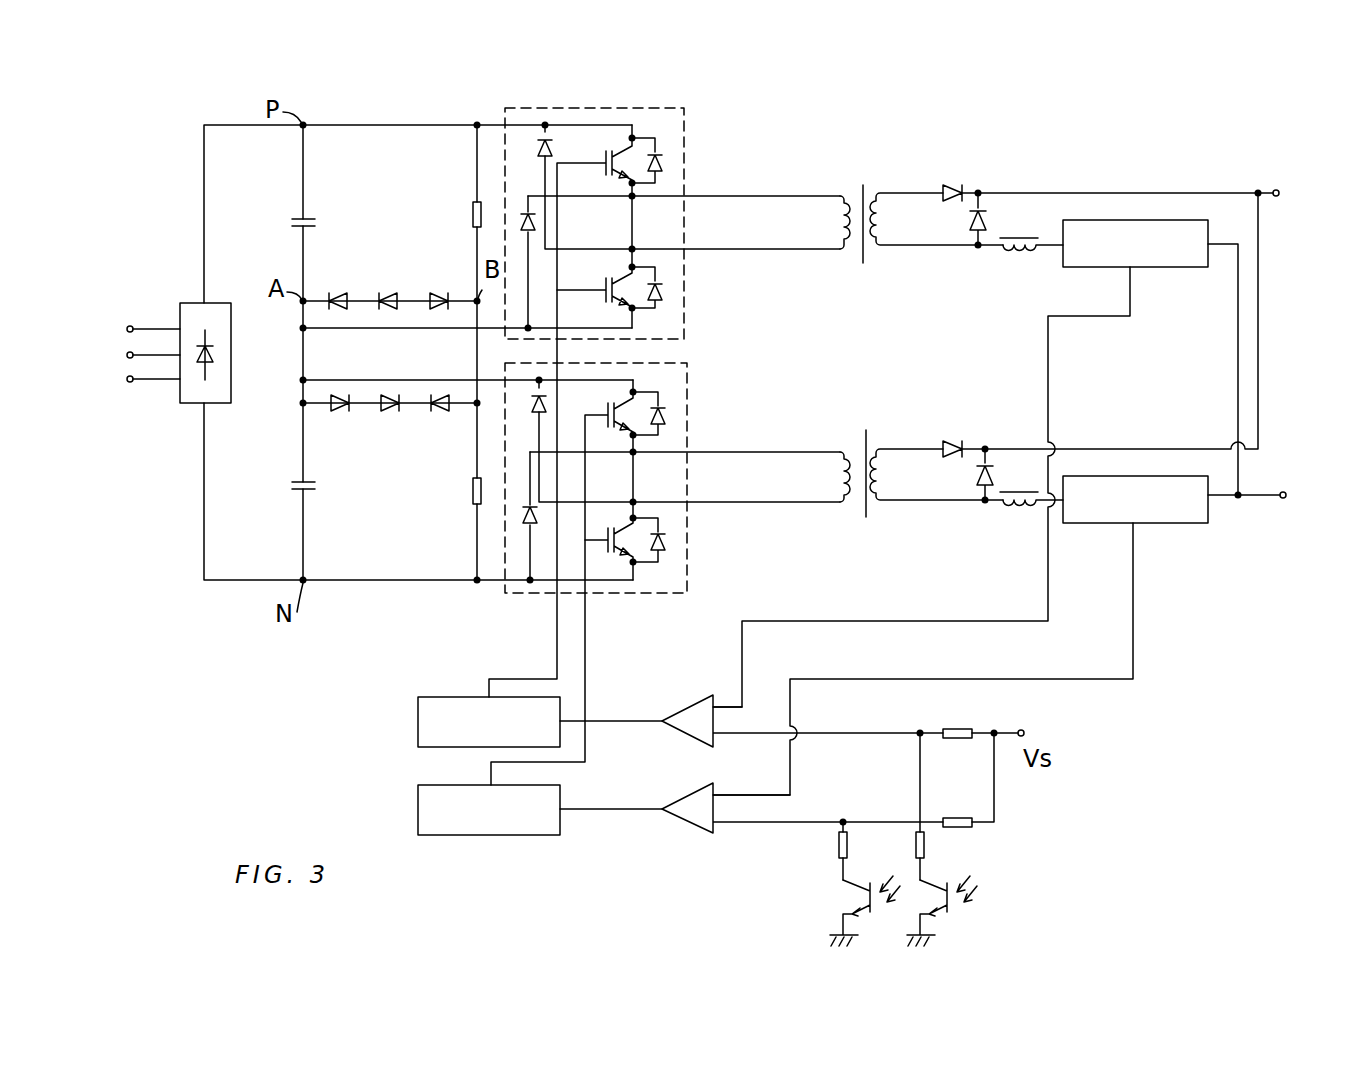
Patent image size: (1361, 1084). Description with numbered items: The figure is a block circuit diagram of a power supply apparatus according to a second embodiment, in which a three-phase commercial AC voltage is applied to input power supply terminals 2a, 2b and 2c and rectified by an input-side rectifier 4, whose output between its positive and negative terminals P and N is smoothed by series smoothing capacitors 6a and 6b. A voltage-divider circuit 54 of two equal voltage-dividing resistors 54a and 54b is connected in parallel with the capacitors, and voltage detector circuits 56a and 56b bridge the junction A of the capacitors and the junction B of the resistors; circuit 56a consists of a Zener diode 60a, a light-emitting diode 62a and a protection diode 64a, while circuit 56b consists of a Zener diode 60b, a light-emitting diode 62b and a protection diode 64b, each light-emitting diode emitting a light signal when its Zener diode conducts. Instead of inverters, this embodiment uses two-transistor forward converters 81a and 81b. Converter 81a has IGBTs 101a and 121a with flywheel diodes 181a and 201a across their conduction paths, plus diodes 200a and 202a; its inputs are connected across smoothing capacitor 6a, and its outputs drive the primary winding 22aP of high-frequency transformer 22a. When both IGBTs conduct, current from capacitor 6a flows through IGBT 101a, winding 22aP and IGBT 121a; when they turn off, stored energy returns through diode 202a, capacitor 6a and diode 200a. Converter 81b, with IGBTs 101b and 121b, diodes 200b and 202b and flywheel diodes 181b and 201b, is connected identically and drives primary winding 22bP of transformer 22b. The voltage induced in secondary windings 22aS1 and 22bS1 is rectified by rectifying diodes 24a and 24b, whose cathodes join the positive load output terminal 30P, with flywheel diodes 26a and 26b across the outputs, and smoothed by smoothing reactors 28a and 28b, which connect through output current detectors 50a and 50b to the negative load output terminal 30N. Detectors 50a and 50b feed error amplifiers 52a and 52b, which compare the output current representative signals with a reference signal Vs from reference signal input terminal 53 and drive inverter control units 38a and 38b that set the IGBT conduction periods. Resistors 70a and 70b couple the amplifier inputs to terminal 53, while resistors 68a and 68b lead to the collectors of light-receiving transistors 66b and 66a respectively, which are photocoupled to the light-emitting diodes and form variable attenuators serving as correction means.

The input power supply terminal 2a is at (150, 316).
The input power supply terminal 2b is at (133, 358).
The input power supply terminal 2c is at (133, 382).
The input-side rectifier 4 is at (222, 322).
The smoothing capacitor 6a is at (316, 228).
The smoothing capacitor 6b is at (316, 488).
The voltage-divider circuit 54 is at (438, 202).
The voltage-dividing resistor 54a is at (472, 216).
The voltage-dividing resistor 54b is at (472, 502).
The voltage detector circuit 56a is at (390, 272).
The voltage detector circuit 56b is at (390, 440).
The Zener diode 60a is at (449, 288).
The Zener diode 60b is at (440, 412).
The light-emitting diode 62a is at (389, 288).
The light-emitting diode 62b is at (390, 412).
The protection diode 64a is at (340, 288).
The protection diode 64b is at (340, 412).
The two-transistor forward converter 81a is at (664, 402).
The two-transistor forward converter 81b is at (650, 567).
The IGBT 101a is at (618, 168).
The IGBT 101b is at (570, 588).
The IGBT 121a is at (618, 294).
The IGBT 121b is at (620, 548).
The flywheel diode 181a is at (664, 170).
The flywheel diode 181b is at (667, 418).
The flywheel diode 201a is at (666, 298).
The flywheel diode 201b is at (668, 548).
The diode 200a is at (537, 228).
The diode 200b is at (526, 530).
The diode 202a is at (577, 145).
The diode 202b is at (548, 412).
The high-frequency transformer 22a is at (895, 224).
The high-frequency transformer 22b is at (894, 489).
The primary winding 22aP is at (829, 230).
The primary winding 22bP is at (838, 482).
The secondary winding 22aS1 is at (898, 216).
The secondary winding 22bS1 is at (898, 476).
The rectifying diode 24a is at (955, 187).
The rectifying diode 24b is at (956, 440).
The flywheel diode 26a is at (968, 240).
The flywheel diode 26b is at (978, 492).
The smoothing reactor 28a is at (1022, 252).
The smoothing reactor 28b is at (1020, 510).
The output current detector 50a is at (1105, 220).
The output current detector 50b is at (1178, 525).
The positive load output terminal 30P is at (1278, 198).
The negative load output terminal 30N is at (1288, 493).
The inverter control unit 38a is at (428, 697).
The inverter control unit 38b is at (490, 835).
The error amplifier 52a is at (687, 718).
The error amplifier 52b is at (688, 818).
The reference signal input terminal 53 is at (1030, 729).
The resistor 70a is at (958, 727).
The resistor 70b is at (958, 816).
The resistor 68a is at (928, 845).
The resistor 68b is at (850, 845).
The light-receiving transistor 66a is at (874, 900).
The light-receiving transistor 66b is at (959, 905).